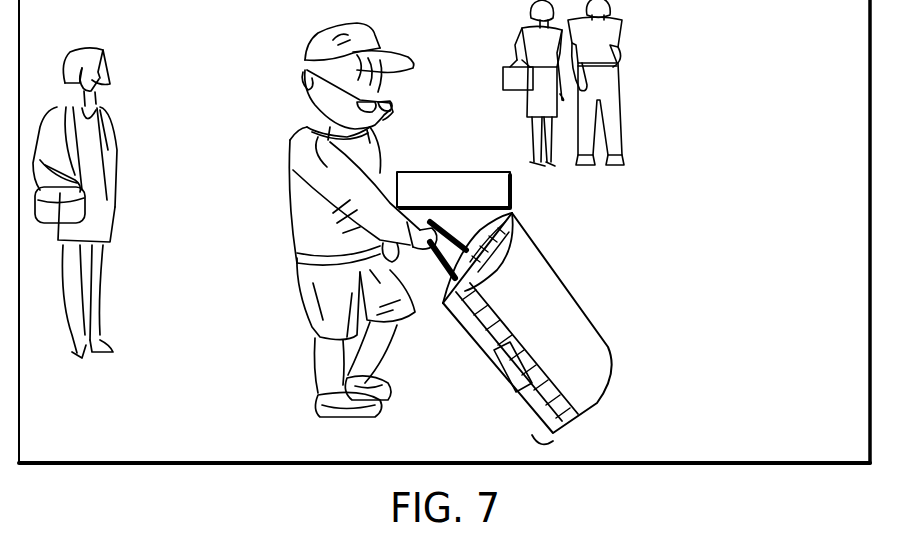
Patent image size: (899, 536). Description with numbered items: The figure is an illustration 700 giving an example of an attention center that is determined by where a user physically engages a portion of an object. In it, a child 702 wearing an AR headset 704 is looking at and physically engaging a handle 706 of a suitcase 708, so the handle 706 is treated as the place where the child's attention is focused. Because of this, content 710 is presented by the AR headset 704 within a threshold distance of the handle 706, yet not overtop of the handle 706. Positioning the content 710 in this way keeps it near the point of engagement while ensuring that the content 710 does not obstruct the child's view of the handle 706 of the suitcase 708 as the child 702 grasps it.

The illustration 700 is at (137, 45).
The child 702 is at (317, 404).
The AR headset 704 is at (307, 53).
The handle 706 is at (510, 213).
The suitcase 708 is at (573, 323).
The content 710 is at (462, 172).